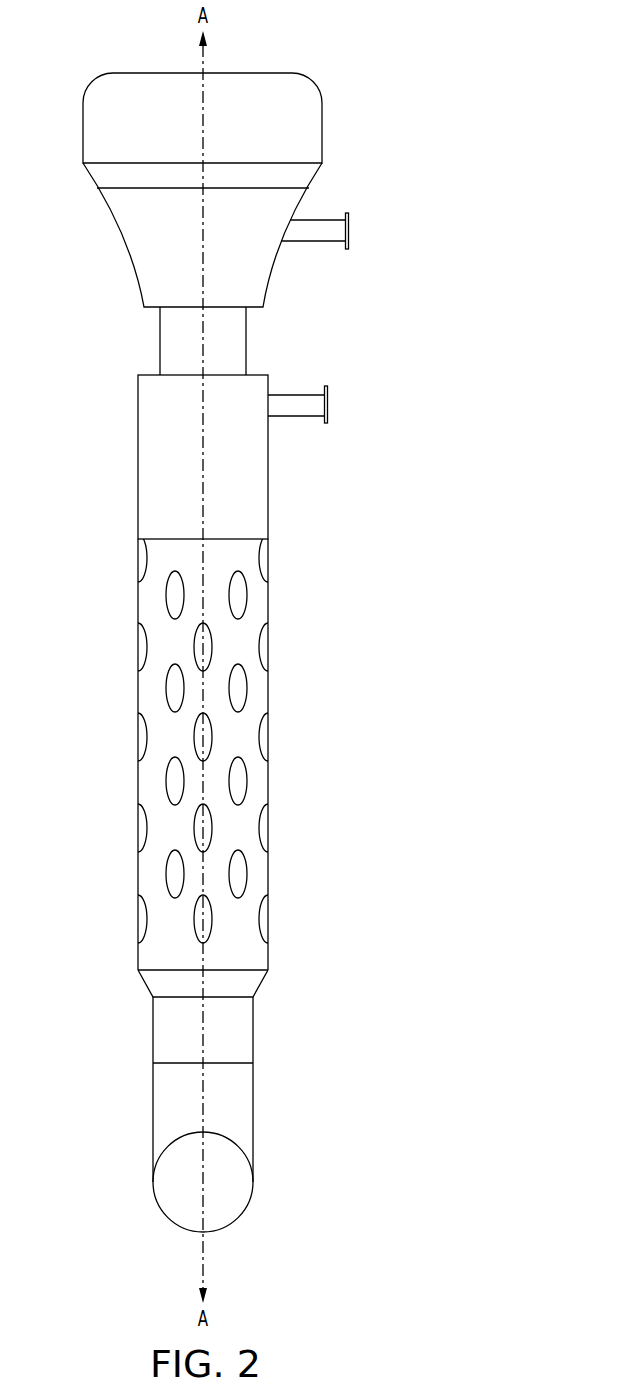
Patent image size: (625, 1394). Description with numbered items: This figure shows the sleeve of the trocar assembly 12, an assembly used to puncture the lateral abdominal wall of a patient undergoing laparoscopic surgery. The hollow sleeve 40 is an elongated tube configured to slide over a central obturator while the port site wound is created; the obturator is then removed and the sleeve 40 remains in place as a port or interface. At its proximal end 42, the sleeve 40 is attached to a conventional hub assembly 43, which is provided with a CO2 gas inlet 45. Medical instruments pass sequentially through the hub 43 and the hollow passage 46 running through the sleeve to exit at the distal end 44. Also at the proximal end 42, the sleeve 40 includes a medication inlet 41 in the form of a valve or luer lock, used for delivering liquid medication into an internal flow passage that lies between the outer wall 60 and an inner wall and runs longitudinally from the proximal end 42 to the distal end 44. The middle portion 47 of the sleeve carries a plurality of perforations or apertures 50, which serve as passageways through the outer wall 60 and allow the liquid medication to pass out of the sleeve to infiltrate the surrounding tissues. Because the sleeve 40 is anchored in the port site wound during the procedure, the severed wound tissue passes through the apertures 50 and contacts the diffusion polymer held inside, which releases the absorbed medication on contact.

The trocar assembly 12 is at (424, 129).
The hollow sleeve 40 is at (269, 503).
The medication inlet 41 is at (328, 405).
The proximal end 42 is at (132, 427).
The hub assembly 43 is at (323, 121).
The distal end 44 is at (230, 1237).
The CO2 gas inlet 45 is at (349, 230).
The hollow passage 46 is at (228, 1180).
The middle portion 47 is at (275, 662).
The apertures 50 is at (207, 733).
The outer wall 60 is at (141, 602).